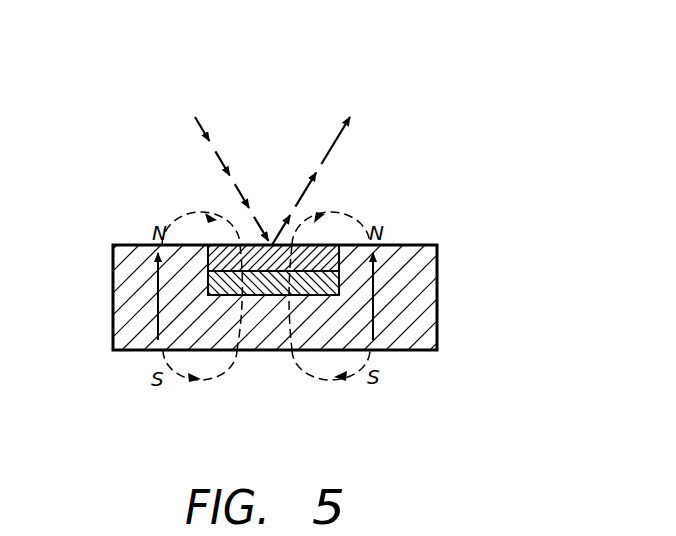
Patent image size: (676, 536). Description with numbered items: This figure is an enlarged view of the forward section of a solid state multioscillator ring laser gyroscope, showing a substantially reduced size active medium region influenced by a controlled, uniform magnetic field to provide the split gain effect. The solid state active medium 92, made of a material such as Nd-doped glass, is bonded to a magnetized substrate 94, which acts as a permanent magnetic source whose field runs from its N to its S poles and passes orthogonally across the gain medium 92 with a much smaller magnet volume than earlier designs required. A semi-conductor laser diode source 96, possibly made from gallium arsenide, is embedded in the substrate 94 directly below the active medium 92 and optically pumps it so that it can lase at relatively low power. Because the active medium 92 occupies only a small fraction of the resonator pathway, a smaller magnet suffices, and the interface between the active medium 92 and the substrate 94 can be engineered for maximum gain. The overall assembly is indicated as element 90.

The magneto-optic recording medium 90 is at (373, 319).
The solid state active medium 92 is at (245, 245).
The magnetized substrate 94 is at (427, 283).
The semi-conductor laser diode source 96 is at (268, 285).